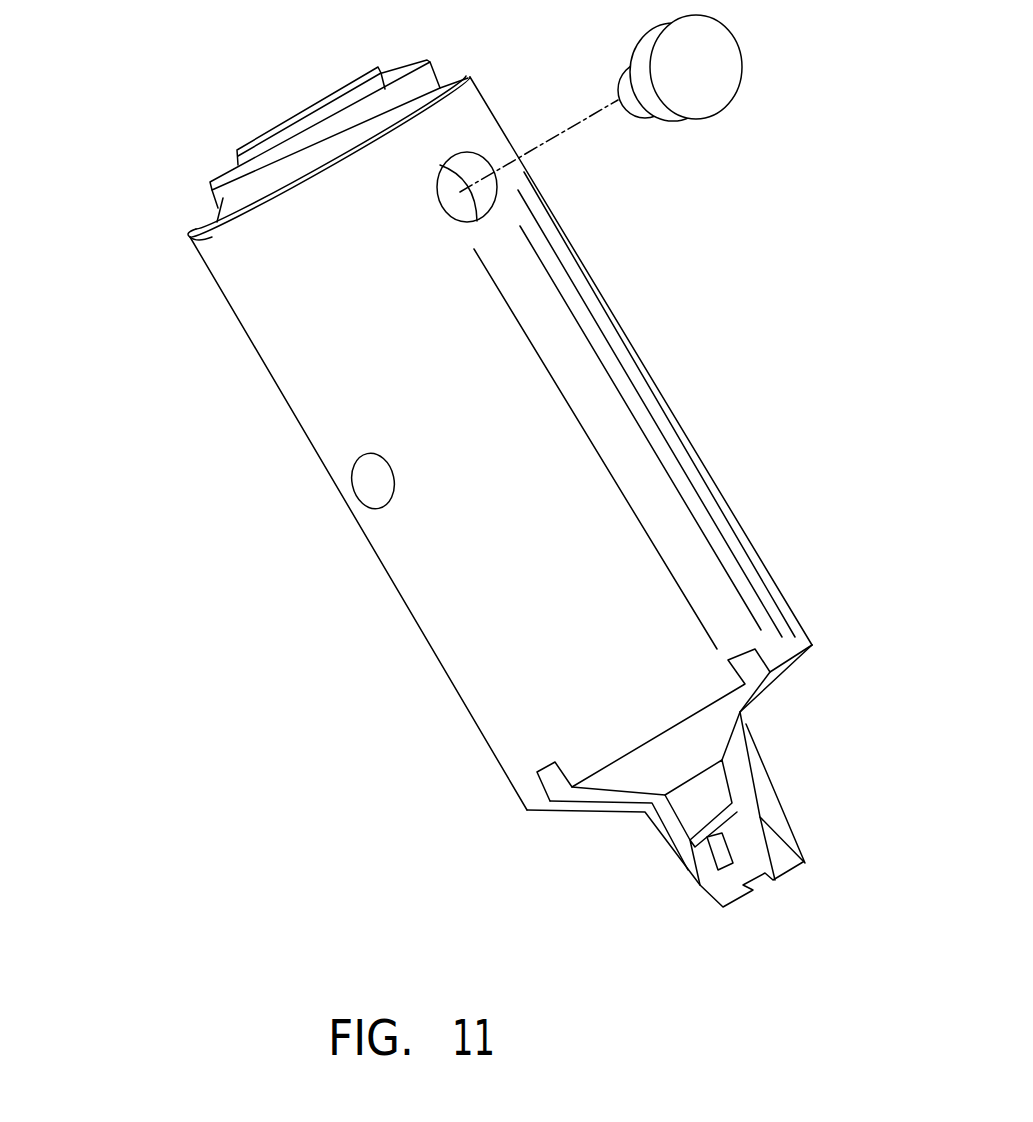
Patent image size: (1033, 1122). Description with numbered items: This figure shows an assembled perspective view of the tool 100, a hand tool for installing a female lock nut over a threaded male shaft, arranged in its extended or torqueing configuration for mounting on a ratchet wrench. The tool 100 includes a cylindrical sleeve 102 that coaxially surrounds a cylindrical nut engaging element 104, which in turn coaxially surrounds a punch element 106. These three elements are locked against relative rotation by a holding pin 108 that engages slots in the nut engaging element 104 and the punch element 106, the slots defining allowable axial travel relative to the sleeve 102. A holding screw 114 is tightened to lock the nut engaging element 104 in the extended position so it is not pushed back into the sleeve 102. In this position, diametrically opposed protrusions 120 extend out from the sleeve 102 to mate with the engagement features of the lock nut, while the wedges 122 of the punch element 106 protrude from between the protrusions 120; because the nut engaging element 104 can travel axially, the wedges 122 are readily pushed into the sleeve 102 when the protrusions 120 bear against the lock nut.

The tool 100 is at (293, 596).
The cylindrical sleeve 102 is at (445, 587).
The nut engaging element 104 is at (200, 250).
The punch element 106 is at (282, 118).
The holding pin 108 is at (383, 480).
The holding screw 114 is at (733, 65).
The protrusions 120 is at (677, 857).
The wedges 122 is at (778, 843).